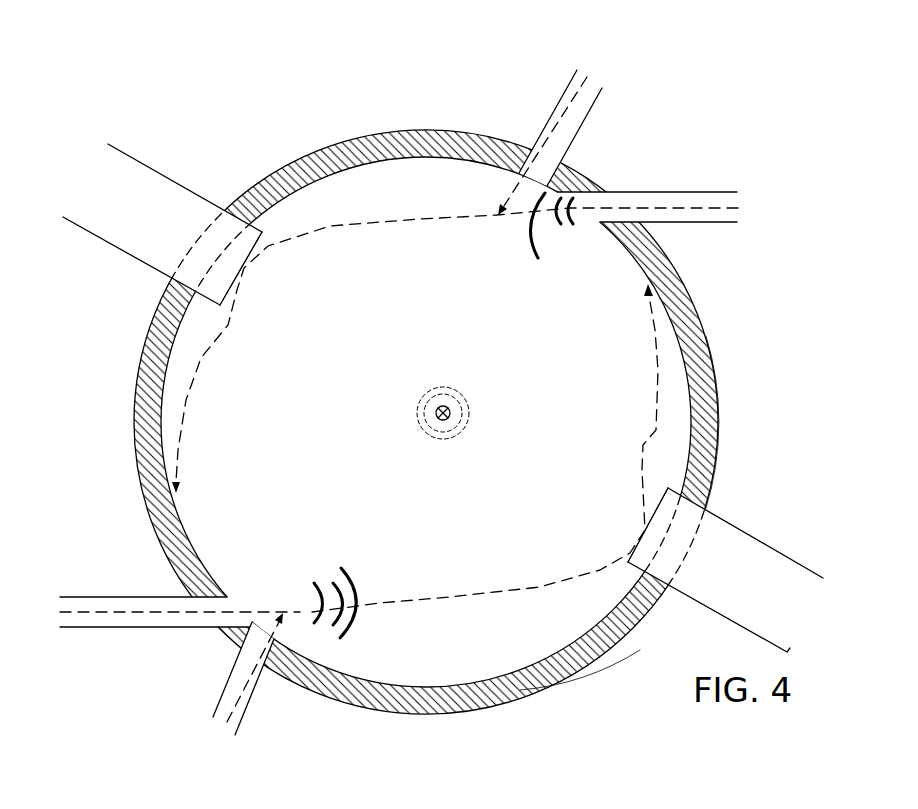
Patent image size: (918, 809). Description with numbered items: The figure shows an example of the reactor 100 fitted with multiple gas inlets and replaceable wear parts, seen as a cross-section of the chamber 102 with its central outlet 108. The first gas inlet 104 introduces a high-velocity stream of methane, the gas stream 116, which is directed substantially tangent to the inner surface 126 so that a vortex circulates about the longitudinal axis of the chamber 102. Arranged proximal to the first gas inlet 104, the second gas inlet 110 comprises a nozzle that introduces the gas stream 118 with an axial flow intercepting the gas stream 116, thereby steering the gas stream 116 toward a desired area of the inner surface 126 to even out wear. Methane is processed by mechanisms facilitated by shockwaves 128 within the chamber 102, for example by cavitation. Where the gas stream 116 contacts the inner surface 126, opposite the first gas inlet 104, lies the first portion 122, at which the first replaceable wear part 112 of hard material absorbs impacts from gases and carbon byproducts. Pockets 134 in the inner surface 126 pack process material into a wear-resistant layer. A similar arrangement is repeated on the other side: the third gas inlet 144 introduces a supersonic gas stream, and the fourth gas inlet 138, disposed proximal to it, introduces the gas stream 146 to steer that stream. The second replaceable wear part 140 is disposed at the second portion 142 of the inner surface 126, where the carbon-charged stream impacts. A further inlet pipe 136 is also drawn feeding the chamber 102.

The reactor 100 is at (421, 394).
The chamber 102 is at (713, 470).
The first gas inlet 104 is at (700, 192).
The outlet 108 is at (451, 413).
The second gas inlet 110 is at (602, 88).
The first replaceable wear part 112 is at (100, 235).
The gas stream 116 is at (337, 228).
The gas stream 118 is at (588, 70).
The first portion 122 is at (225, 212).
The inner surface 126 is at (580, 637).
The shockwaves 128 is at (552, 228).
The pockets 134 is at (707, 386).
The second inlet pipe 136 is at (70, 597).
The fourth gas inlet 138 is at (235, 665).
The second replaceable wear part 140 is at (713, 593).
The second portion 142 is at (692, 518).
The third gas inlet 144 is at (60, 612).
The gas stream 146 is at (210, 722).